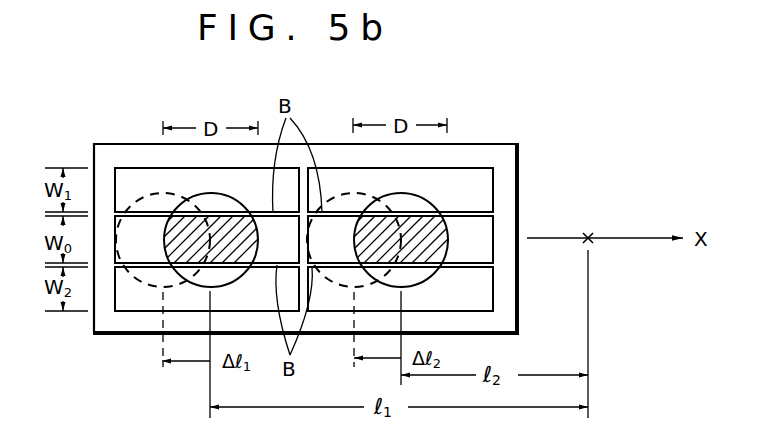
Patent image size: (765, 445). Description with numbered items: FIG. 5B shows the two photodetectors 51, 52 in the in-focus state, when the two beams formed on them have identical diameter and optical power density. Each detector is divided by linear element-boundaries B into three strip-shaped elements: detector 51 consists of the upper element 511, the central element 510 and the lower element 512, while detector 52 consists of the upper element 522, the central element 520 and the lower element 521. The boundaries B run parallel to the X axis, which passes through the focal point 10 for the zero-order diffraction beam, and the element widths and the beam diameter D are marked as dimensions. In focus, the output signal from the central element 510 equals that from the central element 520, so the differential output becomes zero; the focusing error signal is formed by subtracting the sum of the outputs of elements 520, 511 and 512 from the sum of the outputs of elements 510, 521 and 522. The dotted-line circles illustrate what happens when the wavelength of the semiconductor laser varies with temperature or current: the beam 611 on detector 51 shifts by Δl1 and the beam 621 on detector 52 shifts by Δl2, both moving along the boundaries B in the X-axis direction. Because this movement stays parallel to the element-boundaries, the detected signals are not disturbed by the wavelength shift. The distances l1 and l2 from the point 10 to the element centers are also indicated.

The photodetector 51 is at (163, 260).
The element of detector 51 510 is at (113, 252).
The element of detector 51 511 is at (127, 183).
The element of detector 51 512 is at (128, 298).
The photodetector 52 is at (440, 245).
The element of detector 52 520 is at (490, 237).
The element of detector 52 521 is at (480, 295).
The element of detector 52 522 is at (488, 193).
The shifted beam 611 is at (143, 193).
The shifted beam 621 is at (340, 190).
The focal point 10 is at (597, 242).